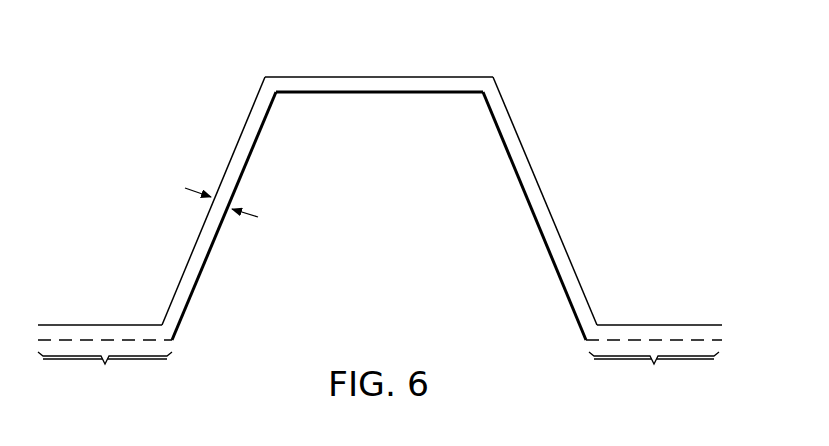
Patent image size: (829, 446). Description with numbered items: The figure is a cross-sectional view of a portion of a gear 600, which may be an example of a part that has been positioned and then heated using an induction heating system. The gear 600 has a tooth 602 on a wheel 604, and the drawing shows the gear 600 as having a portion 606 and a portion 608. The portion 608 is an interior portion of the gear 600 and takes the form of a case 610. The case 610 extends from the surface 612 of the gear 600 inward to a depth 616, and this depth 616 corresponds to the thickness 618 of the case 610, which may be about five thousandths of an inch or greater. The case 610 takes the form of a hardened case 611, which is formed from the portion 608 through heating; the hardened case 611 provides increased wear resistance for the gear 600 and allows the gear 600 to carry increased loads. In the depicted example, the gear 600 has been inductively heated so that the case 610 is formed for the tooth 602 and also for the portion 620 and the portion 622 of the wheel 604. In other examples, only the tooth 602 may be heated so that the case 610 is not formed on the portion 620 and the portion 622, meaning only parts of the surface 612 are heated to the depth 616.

The gear 600 is at (651, 269).
The tooth 602 is at (579, 218).
The wheel 604 is at (233, 393).
The portion 606 is at (399, 236).
The portion 608 is at (516, 133).
The case 610 is at (237, 143).
The hardened case 611 is at (182, 276).
The surface 612 is at (380, 77).
The depth 616 is at (380, 95).
The thickness 618 is at (258, 217).
The portion 620 is at (105, 360).
The portion 622 is at (654, 361).